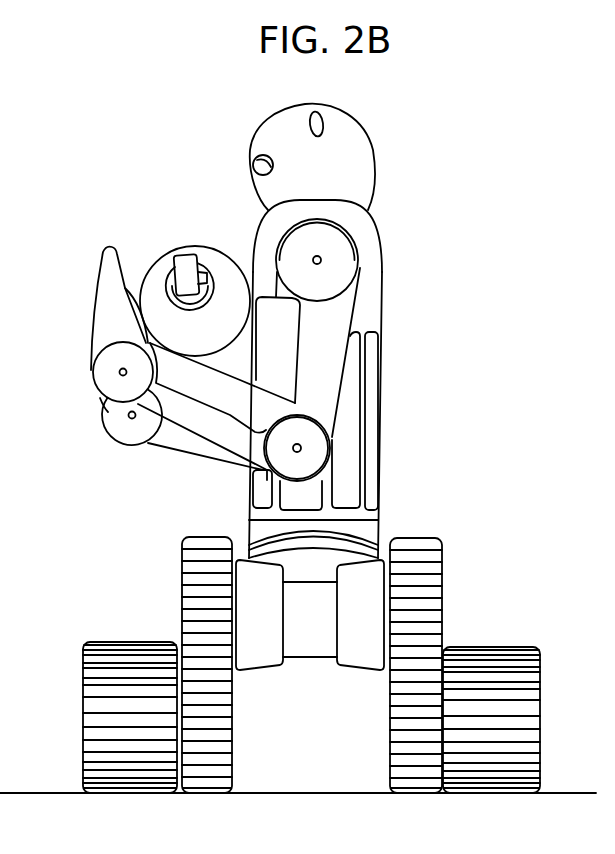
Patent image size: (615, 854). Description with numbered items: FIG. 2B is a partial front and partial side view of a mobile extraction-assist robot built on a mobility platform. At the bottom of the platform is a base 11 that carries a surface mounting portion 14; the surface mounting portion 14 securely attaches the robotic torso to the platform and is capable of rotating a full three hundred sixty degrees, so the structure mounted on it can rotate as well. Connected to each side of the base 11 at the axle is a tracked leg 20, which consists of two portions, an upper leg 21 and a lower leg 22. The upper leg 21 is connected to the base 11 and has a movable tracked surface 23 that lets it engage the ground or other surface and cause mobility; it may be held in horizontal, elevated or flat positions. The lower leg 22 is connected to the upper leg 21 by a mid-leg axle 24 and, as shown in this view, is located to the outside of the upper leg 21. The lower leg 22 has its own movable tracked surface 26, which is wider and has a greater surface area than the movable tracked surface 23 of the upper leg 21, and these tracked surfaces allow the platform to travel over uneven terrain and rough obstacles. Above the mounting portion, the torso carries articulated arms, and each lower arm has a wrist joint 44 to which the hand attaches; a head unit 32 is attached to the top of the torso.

The head unit 32 is at (362, 178).
The wrist joint 44 is at (117, 415).
The surface mounting portion 14 is at (293, 532).
The base 11 is at (318, 645).
The movable tracked surface 23 is at (198, 571).
The upper leg 21 is at (442, 562).
The movable tracked surface 26 is at (100, 722).
The lower leg 22 is at (539, 678).
The tracked leg 20 is at (13, 575).
The mid-leg axle 24 is at (4, 633).